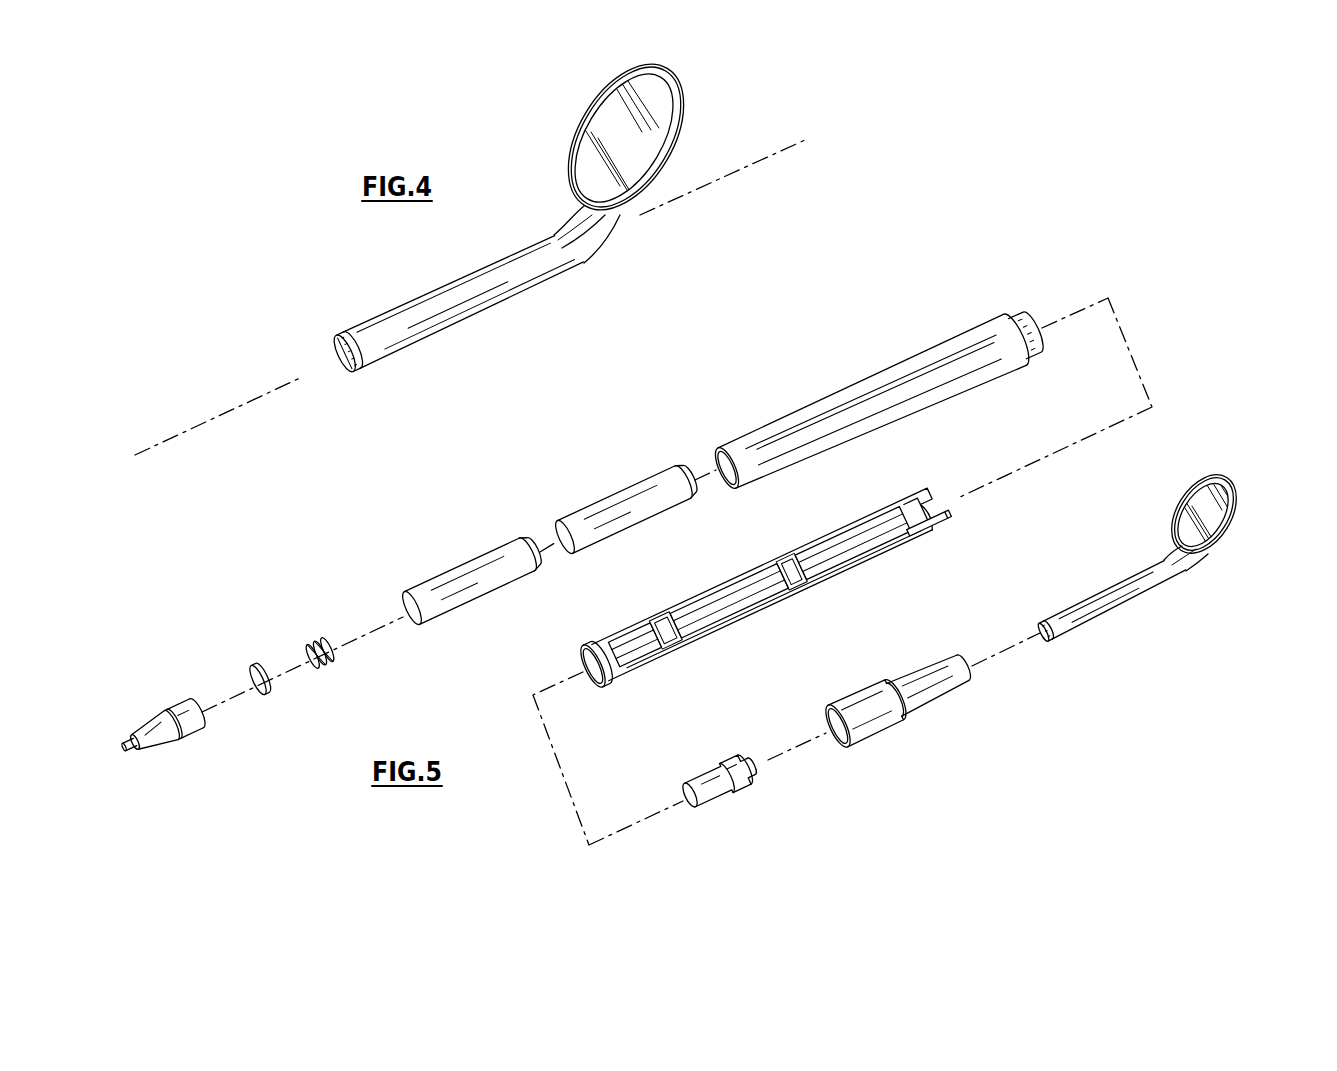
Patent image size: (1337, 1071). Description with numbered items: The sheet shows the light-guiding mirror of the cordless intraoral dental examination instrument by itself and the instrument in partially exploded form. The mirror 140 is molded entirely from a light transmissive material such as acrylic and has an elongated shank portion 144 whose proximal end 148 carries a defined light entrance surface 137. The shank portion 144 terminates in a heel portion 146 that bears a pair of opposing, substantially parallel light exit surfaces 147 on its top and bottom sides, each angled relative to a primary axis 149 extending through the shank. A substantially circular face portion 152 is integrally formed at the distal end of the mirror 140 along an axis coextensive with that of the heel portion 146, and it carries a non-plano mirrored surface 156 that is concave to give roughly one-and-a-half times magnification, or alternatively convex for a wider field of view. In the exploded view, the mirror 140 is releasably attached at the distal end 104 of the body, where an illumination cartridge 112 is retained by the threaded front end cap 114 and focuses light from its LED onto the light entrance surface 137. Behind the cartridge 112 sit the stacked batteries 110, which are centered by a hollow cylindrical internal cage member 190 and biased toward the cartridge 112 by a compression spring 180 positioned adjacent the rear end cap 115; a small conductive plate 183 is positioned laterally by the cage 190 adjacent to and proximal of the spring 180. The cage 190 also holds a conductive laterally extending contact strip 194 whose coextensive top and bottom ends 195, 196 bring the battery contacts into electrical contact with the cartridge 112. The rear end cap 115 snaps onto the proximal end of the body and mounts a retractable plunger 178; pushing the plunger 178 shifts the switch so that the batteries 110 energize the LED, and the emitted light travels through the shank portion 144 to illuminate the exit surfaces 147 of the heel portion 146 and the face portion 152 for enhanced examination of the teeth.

In FIG. 5, the distal end 104 is at (1028, 312).
In FIG. 5, the stacked batteries 110 is at (458, 570).
In FIG. 5, the illumination cartridge 112 is at (727, 800).
In FIG. 5, the front end cap 114 is at (923, 708).
In FIG. 5, the rear end cap 115 is at (145, 713).
In FIG. 4, the light entrance surface 137 is at (318, 358).
In FIG. 4, the mirror 140 is at (358, 290).
In FIG. 5, the mirror 140 is at (1192, 590).
In FIG. 4, the shank portion 144 is at (460, 305).
In FIG. 5, the shank portion 144 is at (1098, 618).
In FIG. 4, the heel portion 146 is at (590, 256).
In FIG. 5, the heel portion 146 is at (1172, 557).
In FIG. 4, the light exit surfaces 147 is at (567, 225).
In FIG. 4, the proximal end 148 is at (352, 376).
In FIG. 4, the primary axis 149 is at (748, 172).
In FIG. 4, the face portion 152 is at (686, 78).
In FIG. 5, the face portion 152 is at (1234, 522).
In FIG. 4, the non-plano mirrored surface 156 is at (648, 134).
In FIG. 5, the non-plano mirrored surface 156 is at (1204, 484).
In FIG. 5, the retractable plunger 178 is at (130, 748).
In FIG. 5, the compression spring 180 is at (317, 640).
In FIG. 5, the conductive plate 183 is at (252, 667).
In FIG. 5, the internal cage member 190 is at (710, 590).
In FIG. 5, the contact strip 194 is at (917, 542).
In FIG. 5, the top end 195 is at (952, 524).
In FIG. 5, the bottom end 196 is at (613, 682).